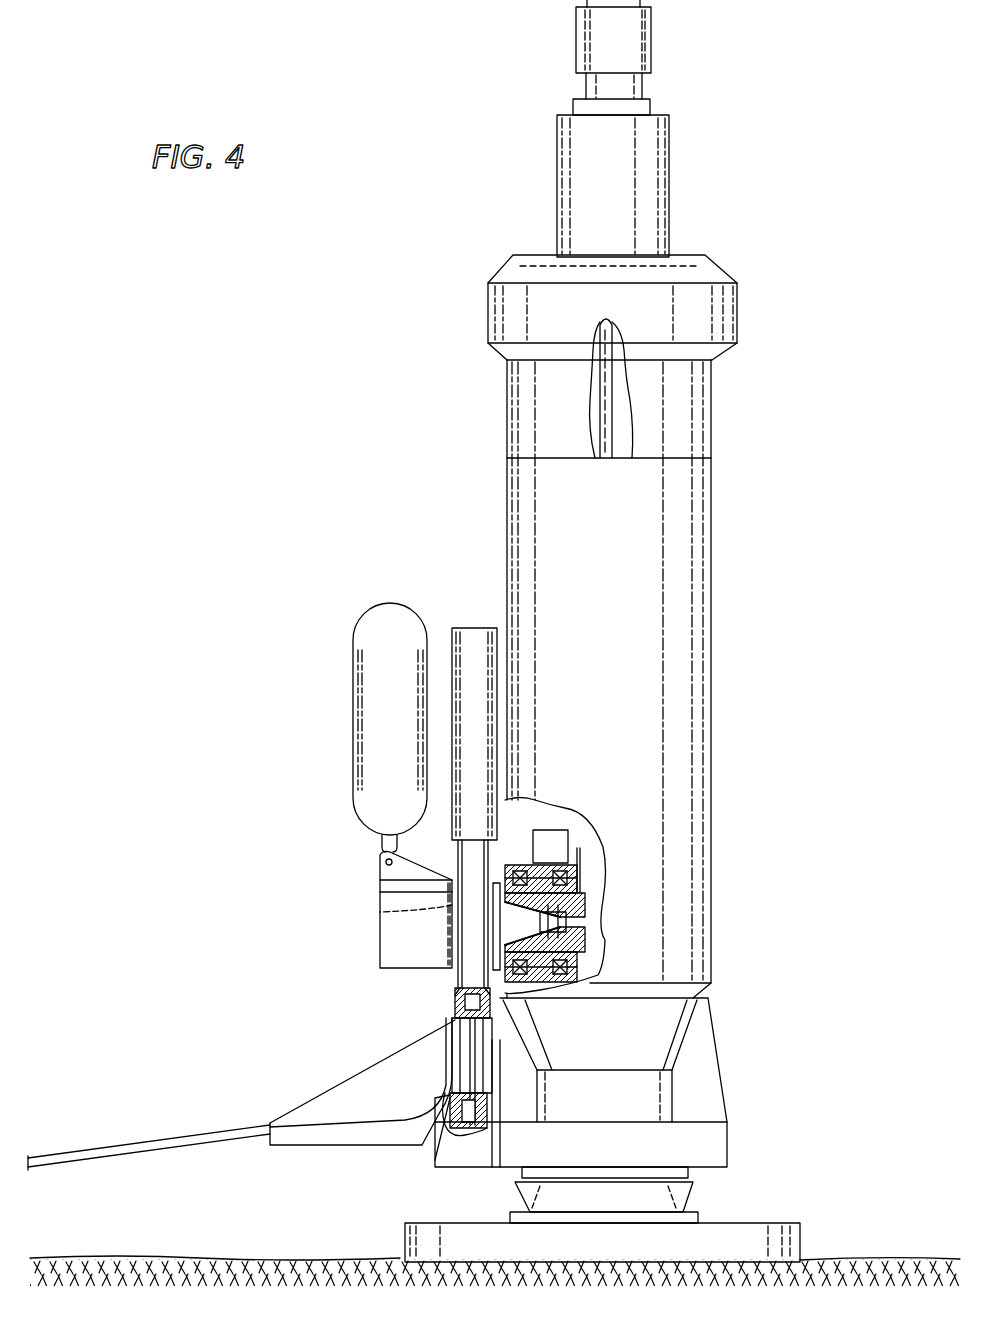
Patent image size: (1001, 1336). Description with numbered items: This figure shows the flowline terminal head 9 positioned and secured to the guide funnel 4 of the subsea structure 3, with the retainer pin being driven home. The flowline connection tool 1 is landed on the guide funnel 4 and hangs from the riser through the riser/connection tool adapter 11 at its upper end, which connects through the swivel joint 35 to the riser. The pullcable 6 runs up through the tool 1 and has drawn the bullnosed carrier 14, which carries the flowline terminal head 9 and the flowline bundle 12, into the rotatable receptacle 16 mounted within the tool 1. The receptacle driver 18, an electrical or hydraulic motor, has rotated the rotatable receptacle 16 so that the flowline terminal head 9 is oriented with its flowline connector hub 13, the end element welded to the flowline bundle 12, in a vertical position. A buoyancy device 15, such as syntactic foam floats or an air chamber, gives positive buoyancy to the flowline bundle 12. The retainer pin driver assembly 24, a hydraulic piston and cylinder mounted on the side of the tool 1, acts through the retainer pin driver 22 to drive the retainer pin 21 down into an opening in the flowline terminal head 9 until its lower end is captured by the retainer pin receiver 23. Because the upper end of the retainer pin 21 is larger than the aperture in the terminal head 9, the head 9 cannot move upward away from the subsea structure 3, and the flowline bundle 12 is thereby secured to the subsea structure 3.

The flowline connection tool 1 is at (722, 599).
The subsea structure 3 is at (748, 1165).
The guide funnel 4 is at (720, 1034).
The pullcable 6 is at (612, 402).
The flowline terminal head 9 is at (300, 1110).
The riser/connection tool adapter 11 is at (488, 302).
The flowline bundle 12 is at (80, 1152).
The flowline connector hub 13 is at (452, 1010).
The bullnosed carrier 14 is at (380, 880).
The buoyancy device 15 is at (353, 652).
The rotatable receptacle 16 is at (585, 895).
The receptacle driver 18 is at (550, 830).
The retainer pin 21 is at (455, 1000).
The retainer pin driver 22 is at (455, 913).
The retainer pin receiver 23 is at (452, 1118).
The retainer pin driver assembly 24 is at (470, 637).
The swivel joint 35 is at (576, 33).